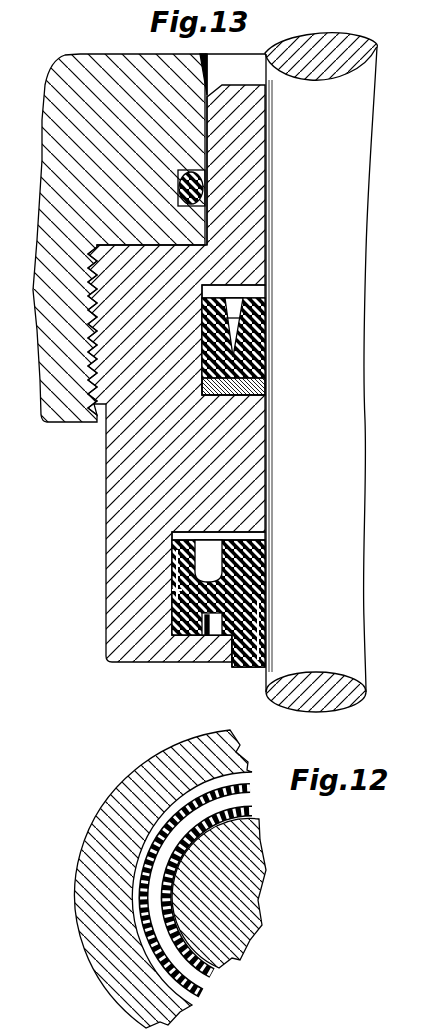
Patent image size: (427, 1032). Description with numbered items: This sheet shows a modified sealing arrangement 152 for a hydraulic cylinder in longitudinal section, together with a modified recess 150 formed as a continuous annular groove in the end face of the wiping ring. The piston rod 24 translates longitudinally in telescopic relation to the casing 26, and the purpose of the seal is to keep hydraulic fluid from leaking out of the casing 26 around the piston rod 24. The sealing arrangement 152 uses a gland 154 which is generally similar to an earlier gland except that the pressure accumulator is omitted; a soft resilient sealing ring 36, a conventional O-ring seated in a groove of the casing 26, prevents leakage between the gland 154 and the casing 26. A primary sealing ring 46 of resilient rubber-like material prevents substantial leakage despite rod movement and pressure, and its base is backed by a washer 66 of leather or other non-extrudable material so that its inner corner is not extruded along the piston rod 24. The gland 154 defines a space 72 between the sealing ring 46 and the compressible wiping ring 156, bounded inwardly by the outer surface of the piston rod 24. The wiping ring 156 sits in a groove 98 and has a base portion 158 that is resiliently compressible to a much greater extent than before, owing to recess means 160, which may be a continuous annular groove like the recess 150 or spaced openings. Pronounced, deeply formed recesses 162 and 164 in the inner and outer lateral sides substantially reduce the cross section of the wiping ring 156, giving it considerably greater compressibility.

In FIG. 13, the piston rod 24 is at (347, 40).
In FIG. 12, the piston rod 24 is at (250, 895).
In FIG. 13, the casing 26 is at (60, 85).
In FIG. 13, the sealing ring 36 is at (180, 187).
In FIG. 13, the sealing ring 46 is at (265, 328).
In FIG. 13, the washer 66 is at (260, 391).
In FIG. 13, the space 72 is at (257, 534).
In FIG. 13, the groove 98 is at (180, 575).
In FIG. 12, the recess 150 is at (152, 932).
In FIG. 13, the sealing arrangement 152 is at (195, 618).
In FIG. 13, the gland 154 is at (110, 655).
In FIG. 12, the gland 154 is at (87, 863).
In FIG. 13, the wiping ring 156 is at (265, 574).
In FIG. 13, the base portion 158 is at (235, 640).
In FIG. 13, the recess means 160 is at (210, 637).
In FIG. 13, the recess 162 is at (257, 611).
In FIG. 13, the recess 164 is at (180, 595).